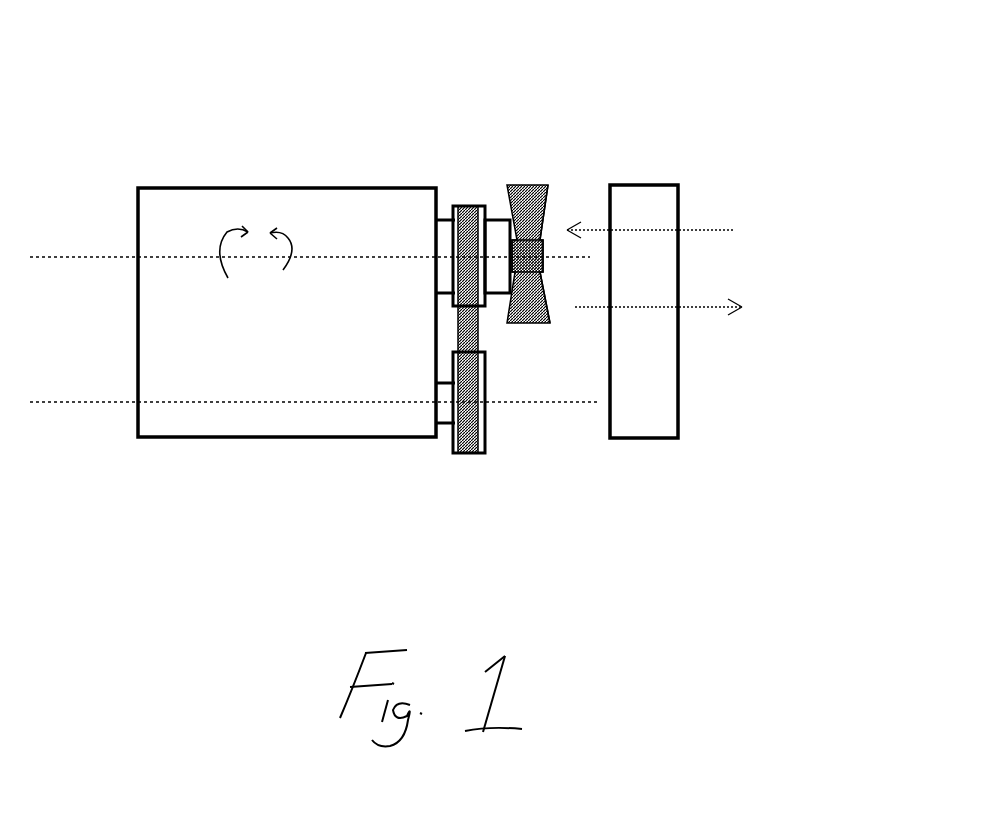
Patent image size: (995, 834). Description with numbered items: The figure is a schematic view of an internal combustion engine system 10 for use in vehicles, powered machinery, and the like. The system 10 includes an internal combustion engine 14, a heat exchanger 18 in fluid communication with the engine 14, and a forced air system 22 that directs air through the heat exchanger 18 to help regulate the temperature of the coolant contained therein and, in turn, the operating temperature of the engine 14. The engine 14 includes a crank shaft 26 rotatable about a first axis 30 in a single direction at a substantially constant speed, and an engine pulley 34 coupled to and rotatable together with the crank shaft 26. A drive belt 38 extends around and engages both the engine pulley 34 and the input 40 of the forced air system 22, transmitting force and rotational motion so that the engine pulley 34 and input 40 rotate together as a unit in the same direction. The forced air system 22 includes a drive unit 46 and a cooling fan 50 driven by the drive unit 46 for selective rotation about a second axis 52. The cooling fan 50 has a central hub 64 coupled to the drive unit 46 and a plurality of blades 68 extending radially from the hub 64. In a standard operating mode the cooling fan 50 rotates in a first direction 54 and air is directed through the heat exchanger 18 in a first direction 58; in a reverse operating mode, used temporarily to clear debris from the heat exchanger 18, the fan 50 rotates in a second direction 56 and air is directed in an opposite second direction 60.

The internal combustion engine system 10 is at (600, 58).
The internal combustion engine 14 is at (232, 188).
The heat exchanger 18 is at (678, 186).
The forced air system 22 is at (527, 185).
The crank shaft 26 is at (440, 438).
The first axis 30 is at (78, 402).
The engine pulley 34 is at (485, 452).
The drive belt 38 is at (470, 330).
The input 40 is at (489, 210).
The drive unit 46 is at (445, 212).
The cooling fan 50 is at (548, 188).
The second axis 52 is at (80, 255).
The first direction 54 is at (221, 236).
The second direction 56 is at (293, 233).
The first direction 58 is at (705, 232).
The second direction 60 is at (708, 310).
The central hub 64 is at (546, 268).
The blades 68 is at (547, 323).